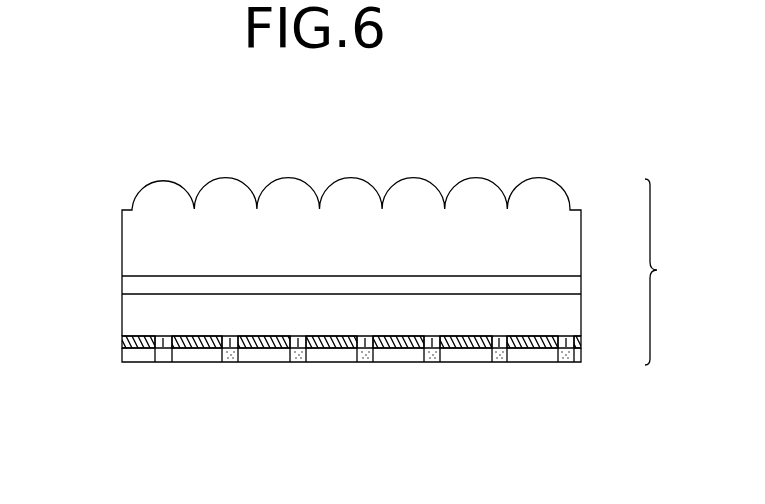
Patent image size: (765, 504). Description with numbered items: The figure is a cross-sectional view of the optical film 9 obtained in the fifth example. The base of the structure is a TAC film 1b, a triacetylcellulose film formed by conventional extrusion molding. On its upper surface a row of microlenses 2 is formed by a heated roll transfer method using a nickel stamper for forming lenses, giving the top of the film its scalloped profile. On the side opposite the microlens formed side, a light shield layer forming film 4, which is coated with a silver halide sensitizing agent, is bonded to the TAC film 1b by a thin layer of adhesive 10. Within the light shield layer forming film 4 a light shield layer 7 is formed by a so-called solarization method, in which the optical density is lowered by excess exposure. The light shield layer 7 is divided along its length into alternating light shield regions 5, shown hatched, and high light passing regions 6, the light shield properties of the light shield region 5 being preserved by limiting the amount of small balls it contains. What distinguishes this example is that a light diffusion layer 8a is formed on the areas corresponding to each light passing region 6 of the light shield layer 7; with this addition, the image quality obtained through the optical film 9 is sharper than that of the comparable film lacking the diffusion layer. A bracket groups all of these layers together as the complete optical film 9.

The microlenses 2 is at (562, 184).
The TAC film 1b is at (351, 242).
The adhesive 10 is at (581, 280).
The light shield layer forming film 4 is at (351, 315).
The light shield region 5 is at (143, 337).
The light passing region 6 is at (218, 339).
The light shield layer 7 is at (122, 342).
The light diffusion layer 8a is at (233, 356).
The optical film 9 is at (661, 272).